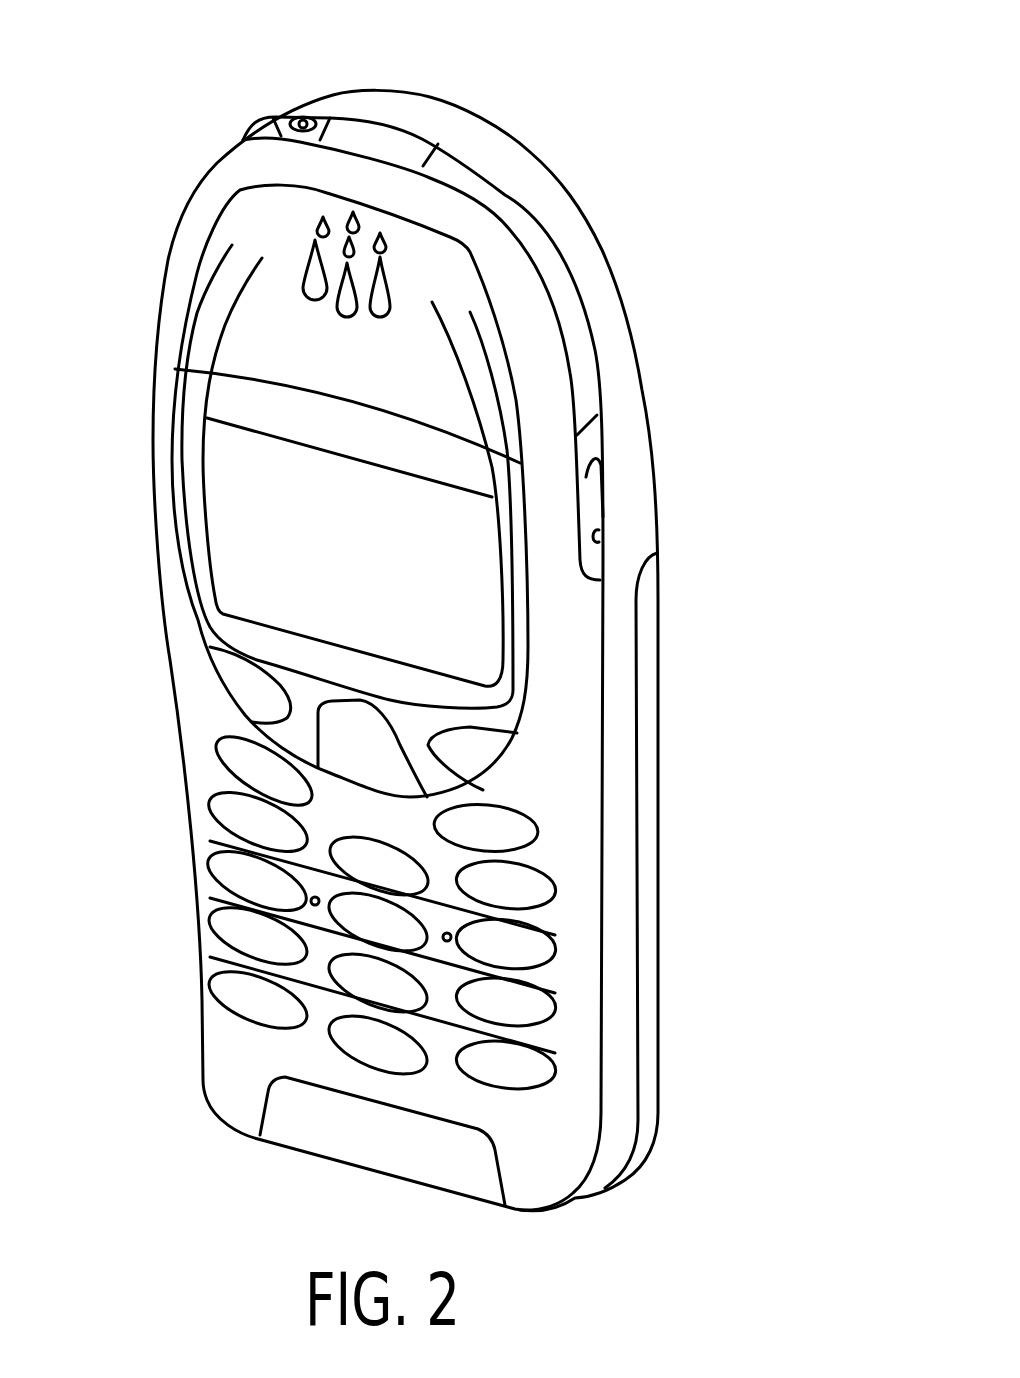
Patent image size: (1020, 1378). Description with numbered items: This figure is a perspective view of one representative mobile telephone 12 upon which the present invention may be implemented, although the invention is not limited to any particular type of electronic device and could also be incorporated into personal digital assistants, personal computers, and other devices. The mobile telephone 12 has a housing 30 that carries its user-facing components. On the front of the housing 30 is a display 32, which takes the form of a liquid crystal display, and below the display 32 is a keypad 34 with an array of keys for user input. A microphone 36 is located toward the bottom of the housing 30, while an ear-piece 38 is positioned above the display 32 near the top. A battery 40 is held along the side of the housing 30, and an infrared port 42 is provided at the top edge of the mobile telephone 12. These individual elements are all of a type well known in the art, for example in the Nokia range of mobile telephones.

The mobile telephone 12 is at (566, 103).
The housing 30 is at (607, 317).
The display 32 is at (467, 609).
The keypad 34 is at (503, 1070).
The microphone 36 is at (298, 1125).
The ear-piece 38 is at (335, 258).
The battery 40 is at (645, 1043).
The infrared port 42 is at (381, 137).